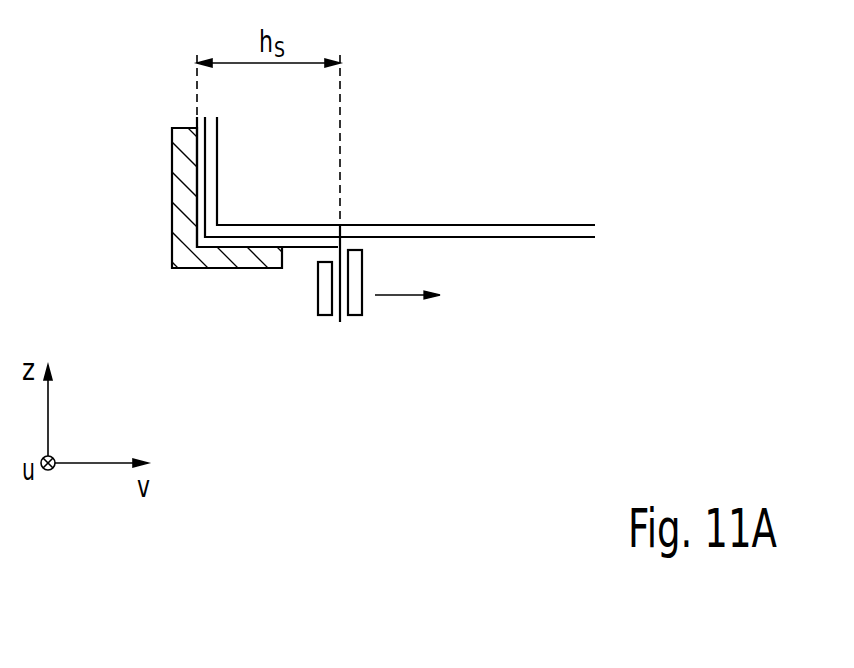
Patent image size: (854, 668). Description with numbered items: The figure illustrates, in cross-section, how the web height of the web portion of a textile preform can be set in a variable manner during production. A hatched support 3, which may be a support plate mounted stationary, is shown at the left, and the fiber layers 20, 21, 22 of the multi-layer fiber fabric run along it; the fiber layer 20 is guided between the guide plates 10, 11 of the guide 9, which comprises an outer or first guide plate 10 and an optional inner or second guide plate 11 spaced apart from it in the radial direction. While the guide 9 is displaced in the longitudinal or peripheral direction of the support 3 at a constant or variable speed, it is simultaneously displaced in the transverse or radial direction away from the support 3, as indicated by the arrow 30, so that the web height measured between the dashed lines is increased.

The support 3 is at (172, 163).
The guide 9 is at (262, 300).
The first guide plate 10 is at (363, 262).
The second guide plate 11 is at (318, 307).
The fiber layer 20 is at (340, 324).
The fiber layer 21 is at (587, 243).
The fiber layer 22 is at (585, 226).
The arrow 30 is at (400, 297).